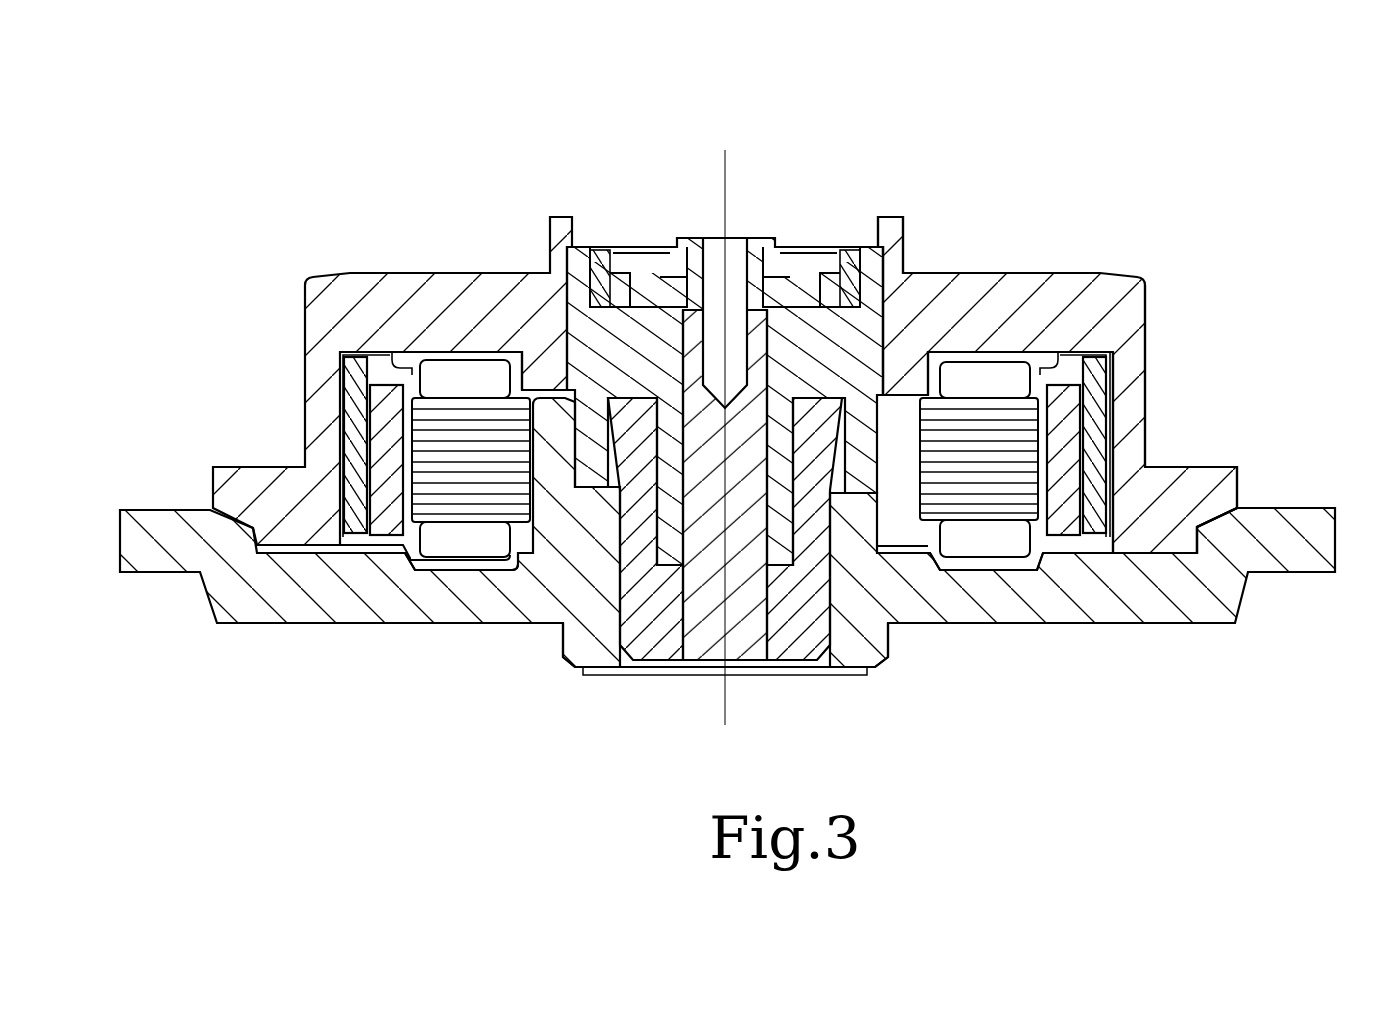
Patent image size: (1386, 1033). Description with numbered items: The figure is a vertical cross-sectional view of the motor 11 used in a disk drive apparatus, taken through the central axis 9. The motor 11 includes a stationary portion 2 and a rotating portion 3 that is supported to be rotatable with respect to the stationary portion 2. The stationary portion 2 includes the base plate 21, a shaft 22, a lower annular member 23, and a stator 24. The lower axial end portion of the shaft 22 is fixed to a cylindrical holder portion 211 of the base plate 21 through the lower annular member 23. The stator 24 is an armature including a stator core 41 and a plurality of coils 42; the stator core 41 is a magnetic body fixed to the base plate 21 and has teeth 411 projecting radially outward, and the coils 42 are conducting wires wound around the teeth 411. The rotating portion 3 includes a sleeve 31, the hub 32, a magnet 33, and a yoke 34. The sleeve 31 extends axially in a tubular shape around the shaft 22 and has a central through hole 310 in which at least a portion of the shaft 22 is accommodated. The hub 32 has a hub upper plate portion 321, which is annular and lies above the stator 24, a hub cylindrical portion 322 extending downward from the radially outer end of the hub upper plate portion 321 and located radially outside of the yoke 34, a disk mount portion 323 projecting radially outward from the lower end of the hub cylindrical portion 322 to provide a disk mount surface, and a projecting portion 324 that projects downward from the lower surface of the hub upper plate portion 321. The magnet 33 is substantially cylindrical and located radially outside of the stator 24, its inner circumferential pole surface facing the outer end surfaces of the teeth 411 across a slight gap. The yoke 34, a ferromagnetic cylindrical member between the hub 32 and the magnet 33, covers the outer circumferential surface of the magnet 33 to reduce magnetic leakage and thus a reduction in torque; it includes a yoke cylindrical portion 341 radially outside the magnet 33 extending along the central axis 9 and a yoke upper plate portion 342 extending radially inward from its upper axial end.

The motor 11 is at (408, 136).
The stationary portion 2 is at (358, 652).
The base plate 21 is at (1020, 602).
The cylindrical holder portion 211 is at (860, 562).
The shaft 22 is at (750, 636).
The lower annular member 23 is at (655, 636).
The stator 24 is at (412, 698).
The rotating portion 3 is at (338, 240).
The sleeve 31 is at (625, 350).
The central through hole 310 is at (697, 504).
The hub 32 is at (962, 162).
The hub upper plate portion 321 is at (957, 310).
The hub cylindrical portion 322 is at (1132, 430).
The disk mount portion 323 is at (1215, 490).
The projecting portion 324 is at (1048, 362).
The magnet 33 is at (1065, 537).
The yoke 34 is at (1225, 700).
The yoke cylindrical portion 341 is at (1103, 545).
The yoke upper plate portion 342 is at (1197, 545).
The stator core 41 is at (447, 536).
The teeth 411 is at (470, 462).
The coils 42 is at (473, 542).
The central axis 9 is at (722, 173).